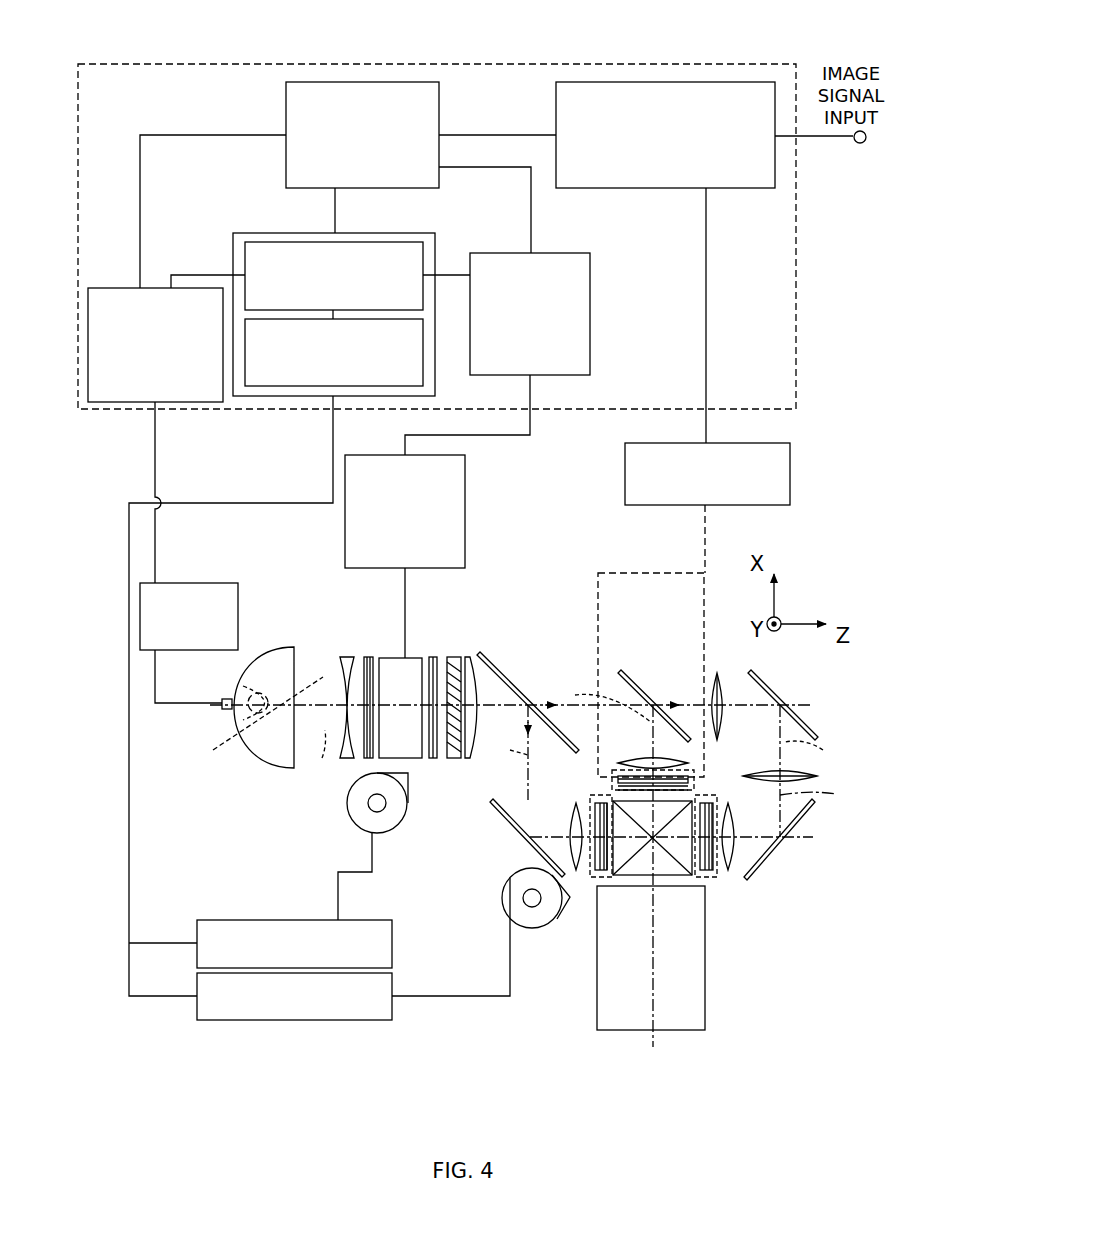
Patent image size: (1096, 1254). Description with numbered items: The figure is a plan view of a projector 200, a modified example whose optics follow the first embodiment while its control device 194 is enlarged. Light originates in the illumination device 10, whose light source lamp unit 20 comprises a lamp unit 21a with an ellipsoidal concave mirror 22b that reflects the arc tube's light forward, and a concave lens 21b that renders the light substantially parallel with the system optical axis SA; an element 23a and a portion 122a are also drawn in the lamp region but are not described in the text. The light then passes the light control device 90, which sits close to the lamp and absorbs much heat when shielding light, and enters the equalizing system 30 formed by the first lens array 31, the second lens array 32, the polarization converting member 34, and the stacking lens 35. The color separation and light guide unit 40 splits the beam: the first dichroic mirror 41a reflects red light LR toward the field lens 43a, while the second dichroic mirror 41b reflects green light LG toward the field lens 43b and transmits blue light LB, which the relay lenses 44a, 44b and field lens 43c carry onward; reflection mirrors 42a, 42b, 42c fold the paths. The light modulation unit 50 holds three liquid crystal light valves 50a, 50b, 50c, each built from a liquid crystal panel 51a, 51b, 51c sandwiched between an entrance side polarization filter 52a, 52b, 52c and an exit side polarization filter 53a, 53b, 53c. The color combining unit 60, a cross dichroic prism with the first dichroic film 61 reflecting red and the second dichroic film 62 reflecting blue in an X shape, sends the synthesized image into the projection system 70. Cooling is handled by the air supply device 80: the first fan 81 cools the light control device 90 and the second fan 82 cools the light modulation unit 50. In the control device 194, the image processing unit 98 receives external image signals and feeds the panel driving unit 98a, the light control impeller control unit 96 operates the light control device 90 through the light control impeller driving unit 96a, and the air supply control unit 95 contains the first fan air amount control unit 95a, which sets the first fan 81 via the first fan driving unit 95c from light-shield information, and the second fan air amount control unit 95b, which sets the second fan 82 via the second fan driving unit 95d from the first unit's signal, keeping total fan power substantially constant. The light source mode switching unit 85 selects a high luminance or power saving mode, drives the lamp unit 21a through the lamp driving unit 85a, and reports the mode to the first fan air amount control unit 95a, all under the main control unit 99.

The projector 200 is at (861, 25).
The control device 194 is at (796, 292).
The main control unit 99 is at (395, 82).
The image processing unit 98 is at (720, 85).
The panel driving unit 98a is at (790, 468).
The light source mode switching unit 85 is at (108, 290).
The lamp driving unit 85a is at (230, 594).
The air supply control unit 95 is at (265, 397).
The first fan air amount control unit 95a is at (405, 243).
The second fan air amount control unit 95b is at (360, 386).
The first fan driving unit 95c is at (382, 958).
The second fan driving unit 95d is at (378, 1006).
The light control impeller control unit 96 is at (572, 262).
The light control impeller driving unit 96a is at (466, 526).
The illumination device 10 is at (270, 689).
The light source lamp unit 20 is at (269, 727).
The lamp unit 21a is at (256, 767).
The concave lens 21b is at (345, 657).
The concave mirror 22b is at (281, 663).
The sub reflector 23a is at (290, 689).
The light emitting portion 122a is at (296, 783).
The equalizing system 30 is at (433, 724).
The first lens array 31 is at (365, 657).
The second lens array 32 is at (433, 657).
The polarization converting member 34 is at (455, 760).
The stacking lens 35 is at (468, 655).
The light control device 90 is at (391, 658).
The color separation and light guide unit 40 is at (676, 733).
The first dichroic mirror 41a is at (503, 675).
The second dichroic mirror 41b is at (636, 688).
The reflection mirror 42a is at (495, 805).
The reflection mirror 42b is at (800, 722).
The reflection mirror 42c is at (798, 830).
The field lens 43a is at (570, 840).
The field lens 43b is at (697, 770).
The field lens 43c is at (740, 852).
The relay lens 44a is at (713, 676).
The relay lens 44b is at (820, 777).
The light modulation unit 50 is at (656, 870).
The liquid crystal light valve 50a is at (590, 800).
The liquid crystal light valve 50b is at (618, 790).
The liquid crystal light valve 50c is at (735, 876).
The liquid crystal panel 51a is at (592, 878).
The liquid crystal panel 51b is at (612, 790).
The liquid crystal panel 51c is at (705, 878).
The entrance side polarization filter 52a is at (598, 802).
The entrance side polarization filter 52b is at (696, 788).
The entrance side polarization filter 52c is at (714, 878).
The exit side polarization filter 53a is at (600, 878).
The exit side polarization filter 53b is at (696, 797).
The exit side polarization filter 53c is at (710, 880).
The color combining unit 60 is at (676, 892).
The first dichroic film 61 is at (662, 860).
The second dichroic film 62 is at (642, 856).
The projection system 70 is at (700, 1005).
The air supply device 80 is at (458, 871).
The first fan 81 is at (391, 835).
The second fan 82 is at (503, 892).